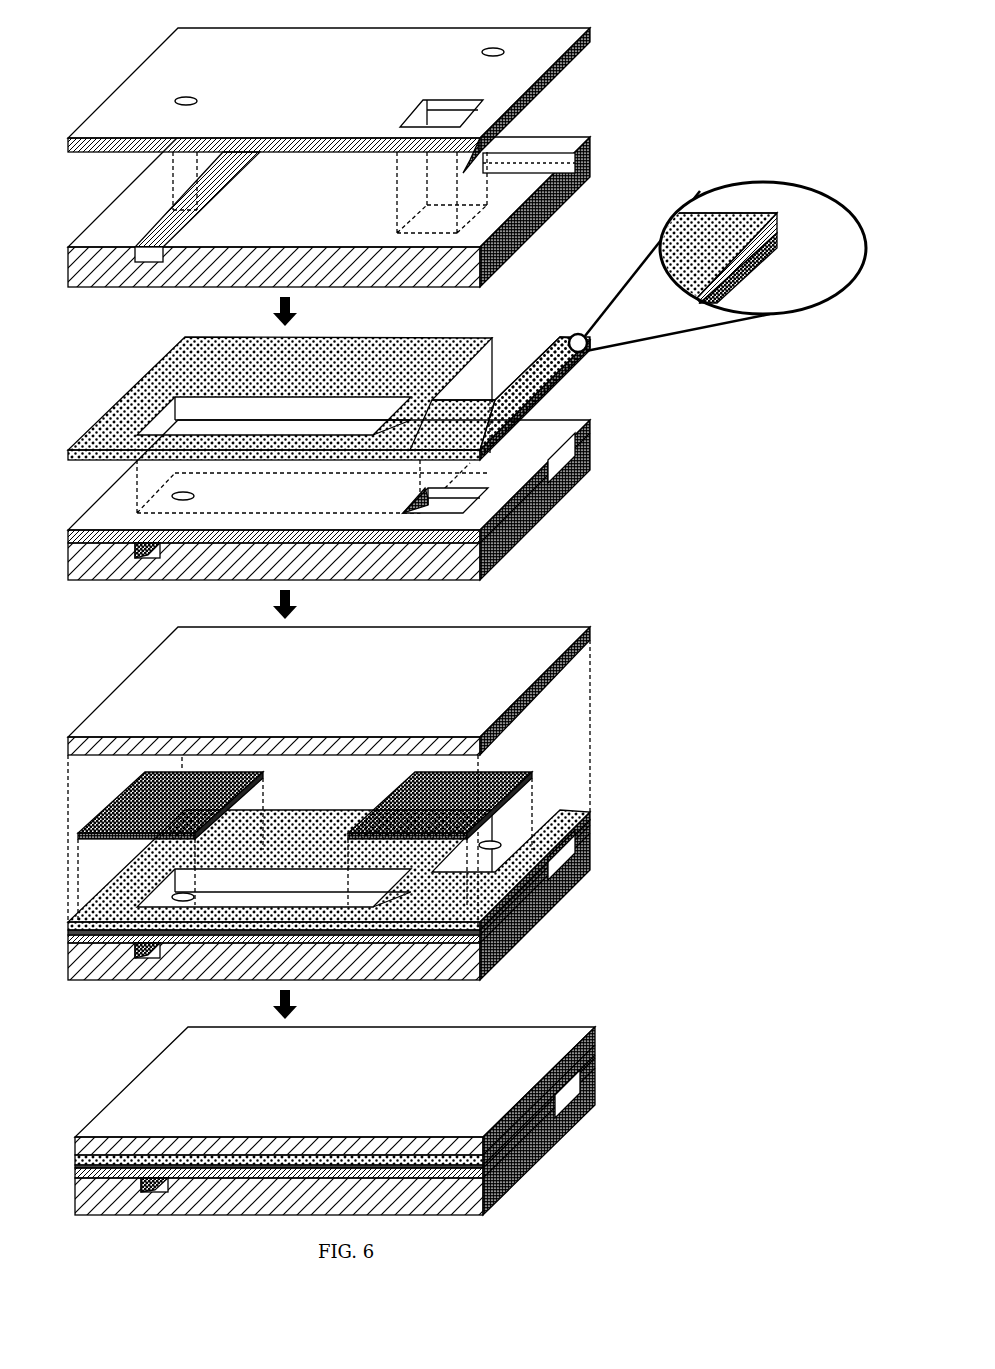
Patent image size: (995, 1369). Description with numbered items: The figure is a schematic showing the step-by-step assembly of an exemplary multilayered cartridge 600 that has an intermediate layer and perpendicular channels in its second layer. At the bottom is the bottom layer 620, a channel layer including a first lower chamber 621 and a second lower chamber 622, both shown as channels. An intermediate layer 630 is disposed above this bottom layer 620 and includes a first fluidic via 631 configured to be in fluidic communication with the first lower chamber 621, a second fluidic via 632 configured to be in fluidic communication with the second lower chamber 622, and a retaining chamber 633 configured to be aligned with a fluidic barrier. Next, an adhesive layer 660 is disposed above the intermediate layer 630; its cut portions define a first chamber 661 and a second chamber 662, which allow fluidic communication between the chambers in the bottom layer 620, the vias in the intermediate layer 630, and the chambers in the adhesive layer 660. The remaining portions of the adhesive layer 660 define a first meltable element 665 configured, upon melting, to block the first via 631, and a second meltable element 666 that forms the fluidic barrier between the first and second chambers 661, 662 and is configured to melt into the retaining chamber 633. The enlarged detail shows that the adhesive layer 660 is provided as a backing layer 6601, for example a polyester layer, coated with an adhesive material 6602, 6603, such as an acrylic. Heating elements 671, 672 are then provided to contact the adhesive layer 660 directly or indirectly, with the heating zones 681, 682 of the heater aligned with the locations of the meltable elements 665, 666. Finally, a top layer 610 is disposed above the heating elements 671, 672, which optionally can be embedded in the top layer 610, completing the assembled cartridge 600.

The multilayered cartridge 600 is at (585, 1024).
The top layer 610 is at (329, 691).
The bottom layer 620 is at (329, 212).
The first lower chamber 621 is at (150, 265).
The second lower chamber 622 is at (578, 163).
The intermediate layer 630 is at (329, 100).
The first fluidic via 631 is at (192, 104).
The second fluidic via 632 is at (496, 55).
The retaining chamber 633 is at (476, 108).
The adhesive layer 660 is at (314, 391).
The first chamber 661 is at (95, 462).
The second chamber 662 is at (517, 340).
The first meltable element 665 is at (130, 409).
The second meltable element 666 is at (447, 427).
The heating element 671 is at (170, 805).
The heating element 672 is at (440, 805).
The heating zone 681 is at (156, 891).
The heating zone 682 is at (460, 870).
The backing layer 6601 is at (781, 232).
The adhesive material 6602 is at (717, 267).
The adhesive material 6603 is at (743, 285).